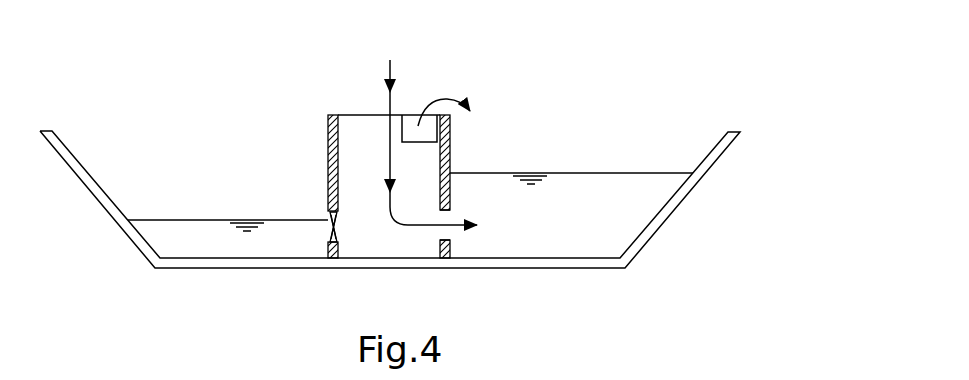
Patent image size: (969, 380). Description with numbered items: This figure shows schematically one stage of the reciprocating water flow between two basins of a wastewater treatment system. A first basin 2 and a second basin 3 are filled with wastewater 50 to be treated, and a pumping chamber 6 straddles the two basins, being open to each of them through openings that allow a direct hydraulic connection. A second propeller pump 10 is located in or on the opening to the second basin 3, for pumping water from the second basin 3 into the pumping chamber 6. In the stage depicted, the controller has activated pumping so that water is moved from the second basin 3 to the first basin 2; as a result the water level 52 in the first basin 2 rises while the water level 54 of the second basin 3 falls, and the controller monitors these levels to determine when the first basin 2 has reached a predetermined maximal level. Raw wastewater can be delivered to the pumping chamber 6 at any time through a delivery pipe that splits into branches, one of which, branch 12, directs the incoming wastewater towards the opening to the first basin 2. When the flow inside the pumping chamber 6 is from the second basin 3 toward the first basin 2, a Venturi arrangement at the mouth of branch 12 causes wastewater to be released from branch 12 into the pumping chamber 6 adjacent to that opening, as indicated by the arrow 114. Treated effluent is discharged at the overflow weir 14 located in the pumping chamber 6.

The first basin 2 is at (625, 150).
The second basin 3 is at (238, 165).
The pumping chamber 6 is at (328, 147).
The second propeller pump 10 is at (330, 230).
The branch 12 is at (457, 225).
The overflow weir 14 is at (450, 98).
The wastewater 50 is at (295, 247).
The water level in the first basin 52 is at (577, 172).
The water level of the second basin 54 is at (187, 220).
The arrow 114 is at (428, 130).